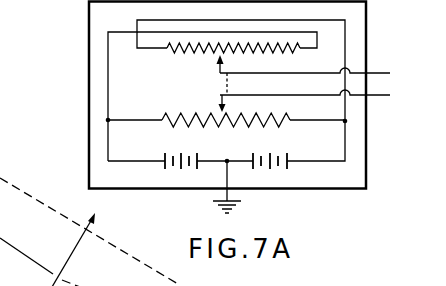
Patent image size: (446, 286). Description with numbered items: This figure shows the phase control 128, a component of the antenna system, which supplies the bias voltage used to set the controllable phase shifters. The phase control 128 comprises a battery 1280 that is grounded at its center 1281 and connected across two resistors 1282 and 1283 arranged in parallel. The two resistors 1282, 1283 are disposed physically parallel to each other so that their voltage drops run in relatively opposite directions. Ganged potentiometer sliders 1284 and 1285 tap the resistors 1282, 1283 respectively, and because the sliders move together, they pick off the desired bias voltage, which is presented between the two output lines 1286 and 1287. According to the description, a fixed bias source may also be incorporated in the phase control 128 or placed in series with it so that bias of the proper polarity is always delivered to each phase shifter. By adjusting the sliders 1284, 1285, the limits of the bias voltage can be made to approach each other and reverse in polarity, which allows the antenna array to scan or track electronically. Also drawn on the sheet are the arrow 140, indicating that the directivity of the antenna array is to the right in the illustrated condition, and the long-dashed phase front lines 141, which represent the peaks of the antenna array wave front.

The phase control 128 is at (88, 144).
The battery 1280 is at (180, 153).
The center 1281 is at (225, 166).
The resistor 1282 is at (162, 113).
The resistor 1283 is at (168, 53).
The ganged potentiometer slider 1284 is at (220, 95).
The ganged potentiometer slider 1285 is at (218, 73).
The output line 1286 is at (370, 99).
The output line 1287 is at (354, 72).
The arrow 140 is at (85, 232).
The long-dashed phase front lines 141 is at (89, 232).